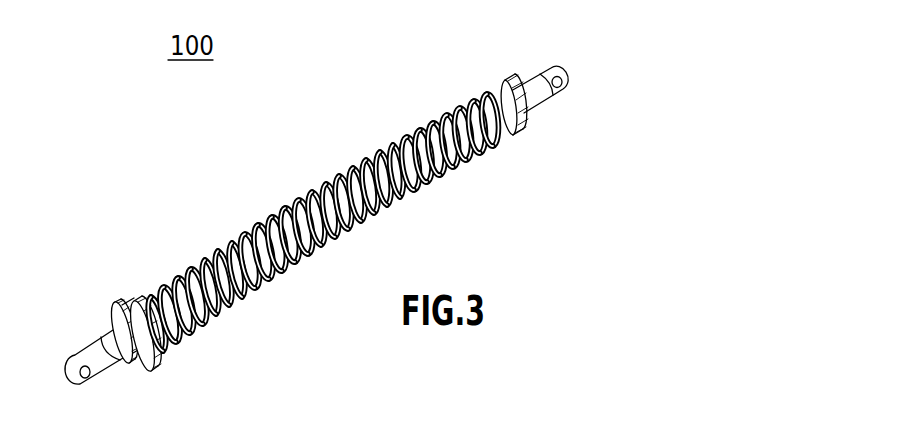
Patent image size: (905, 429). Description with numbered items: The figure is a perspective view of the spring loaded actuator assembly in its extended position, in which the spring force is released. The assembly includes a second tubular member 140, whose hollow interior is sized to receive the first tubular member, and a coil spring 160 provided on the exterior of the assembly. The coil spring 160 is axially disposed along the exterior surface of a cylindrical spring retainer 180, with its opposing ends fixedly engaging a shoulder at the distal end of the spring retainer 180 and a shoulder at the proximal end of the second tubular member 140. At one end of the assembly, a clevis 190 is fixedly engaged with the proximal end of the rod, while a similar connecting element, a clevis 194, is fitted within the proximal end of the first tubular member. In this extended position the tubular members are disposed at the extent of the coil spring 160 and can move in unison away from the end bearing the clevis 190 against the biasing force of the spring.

The second tubular member 140 is at (147, 295).
The coil spring 160 is at (227, 247).
The cylindrical spring retainer 180 is at (365, 173).
The clevis 190 is at (542, 77).
The clevis 194 is at (75, 355).